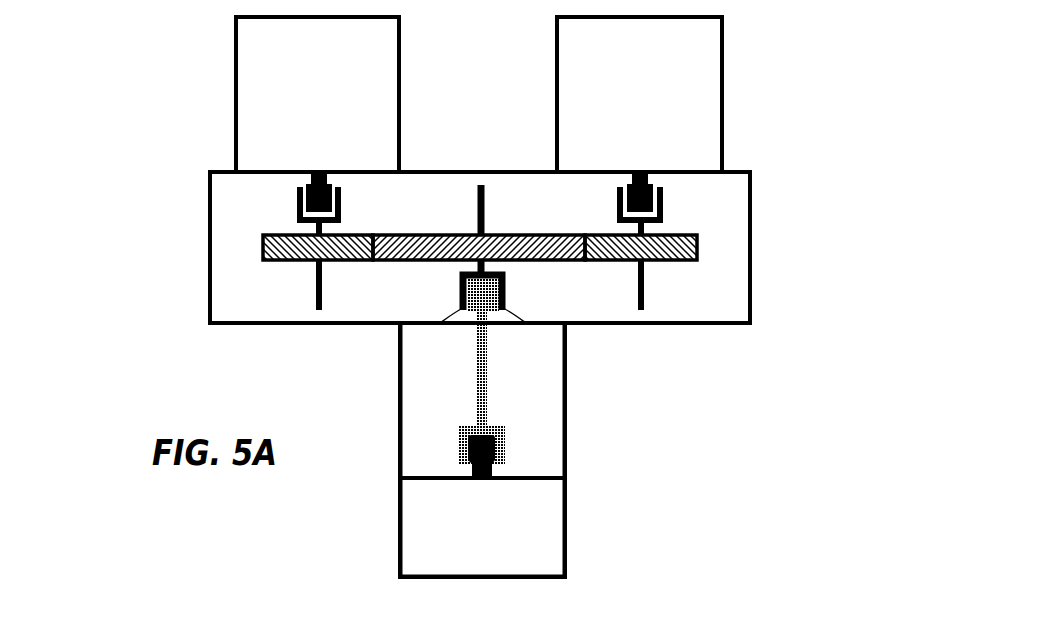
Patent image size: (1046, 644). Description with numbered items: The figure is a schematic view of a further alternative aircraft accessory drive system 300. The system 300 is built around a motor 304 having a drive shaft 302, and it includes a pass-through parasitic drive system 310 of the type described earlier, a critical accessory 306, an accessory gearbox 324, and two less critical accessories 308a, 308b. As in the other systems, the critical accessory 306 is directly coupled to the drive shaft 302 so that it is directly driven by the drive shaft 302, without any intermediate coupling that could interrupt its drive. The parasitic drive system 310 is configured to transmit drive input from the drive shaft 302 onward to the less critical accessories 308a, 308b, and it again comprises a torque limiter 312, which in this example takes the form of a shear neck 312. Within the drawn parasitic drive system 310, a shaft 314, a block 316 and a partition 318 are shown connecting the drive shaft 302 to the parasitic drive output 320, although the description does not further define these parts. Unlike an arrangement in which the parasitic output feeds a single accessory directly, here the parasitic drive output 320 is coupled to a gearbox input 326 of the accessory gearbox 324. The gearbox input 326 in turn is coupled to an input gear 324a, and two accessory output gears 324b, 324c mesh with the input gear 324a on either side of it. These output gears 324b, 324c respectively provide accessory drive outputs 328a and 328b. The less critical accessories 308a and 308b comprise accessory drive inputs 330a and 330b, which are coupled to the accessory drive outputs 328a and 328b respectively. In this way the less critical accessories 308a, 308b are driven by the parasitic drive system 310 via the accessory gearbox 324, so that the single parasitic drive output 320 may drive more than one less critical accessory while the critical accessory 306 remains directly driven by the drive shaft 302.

The accessory drive system 300 is at (782, 76).
The drive shaft 302 is at (495, 465).
The motor 304 is at (533, 548).
The critical accessory 306 is at (547, 430).
The less critical accessory 308a is at (262, 56).
The less critical accessory 308b is at (583, 60).
The parasitic drive system 310 is at (540, 367).
The torque limiter 312 is at (515, 323).
The shaft 314 is at (477, 375).
The piston block 316 is at (505, 443).
The partition 318 is at (458, 443).
The parasitic drive output 320 is at (467, 303).
The accessory gearbox 324 is at (280, 310).
The input gear 324a is at (400, 263).
The accessory output gear 324b is at (263, 243).
The accessory output gear 324c is at (697, 245).
The gearbox input 326 is at (505, 297).
The accessory drive output 328a is at (297, 198).
The accessory drive output 328b is at (667, 205).
The accessory drive input 330a is at (332, 175).
The accessory drive input 330b is at (653, 183).